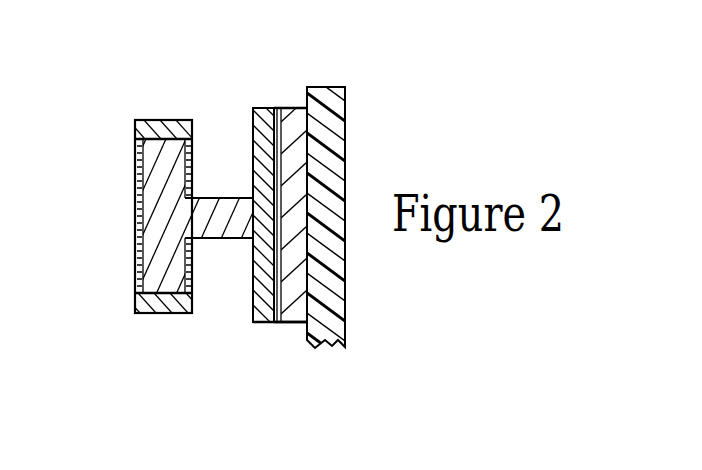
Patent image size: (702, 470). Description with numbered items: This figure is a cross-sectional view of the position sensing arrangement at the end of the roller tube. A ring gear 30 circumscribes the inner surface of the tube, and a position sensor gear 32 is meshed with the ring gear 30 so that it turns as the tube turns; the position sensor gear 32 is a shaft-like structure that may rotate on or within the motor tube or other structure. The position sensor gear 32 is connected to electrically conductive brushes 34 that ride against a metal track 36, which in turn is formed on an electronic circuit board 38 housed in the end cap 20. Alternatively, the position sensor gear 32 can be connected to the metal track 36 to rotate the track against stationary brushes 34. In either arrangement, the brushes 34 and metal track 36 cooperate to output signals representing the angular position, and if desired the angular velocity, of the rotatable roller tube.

The end cap 20 is at (337, 88).
The ring gear 30 is at (150, 128).
The position sensor gear 32 is at (158, 172).
The electrically conductive brushes 34 is at (262, 110).
The metal track 36 is at (280, 323).
The electronic circuit board 38 is at (293, 118).